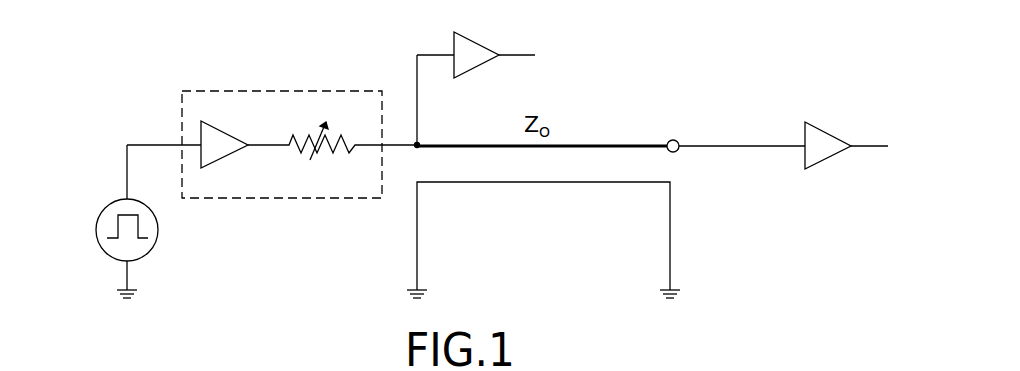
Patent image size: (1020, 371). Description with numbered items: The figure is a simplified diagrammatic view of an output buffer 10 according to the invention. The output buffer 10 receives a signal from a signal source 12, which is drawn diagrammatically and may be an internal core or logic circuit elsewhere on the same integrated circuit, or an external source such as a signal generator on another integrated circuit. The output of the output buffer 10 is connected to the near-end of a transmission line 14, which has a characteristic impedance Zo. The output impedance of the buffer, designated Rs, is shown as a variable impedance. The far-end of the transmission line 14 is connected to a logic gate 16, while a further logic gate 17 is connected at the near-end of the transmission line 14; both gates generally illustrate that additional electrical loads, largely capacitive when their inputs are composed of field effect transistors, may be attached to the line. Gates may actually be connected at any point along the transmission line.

The output buffer 10 is at (202, 89).
The signal source 12 is at (106, 205).
The transmission line 14 is at (579, 143).
The logic gate 16 is at (813, 127).
The logic gate 17 is at (467, 35).